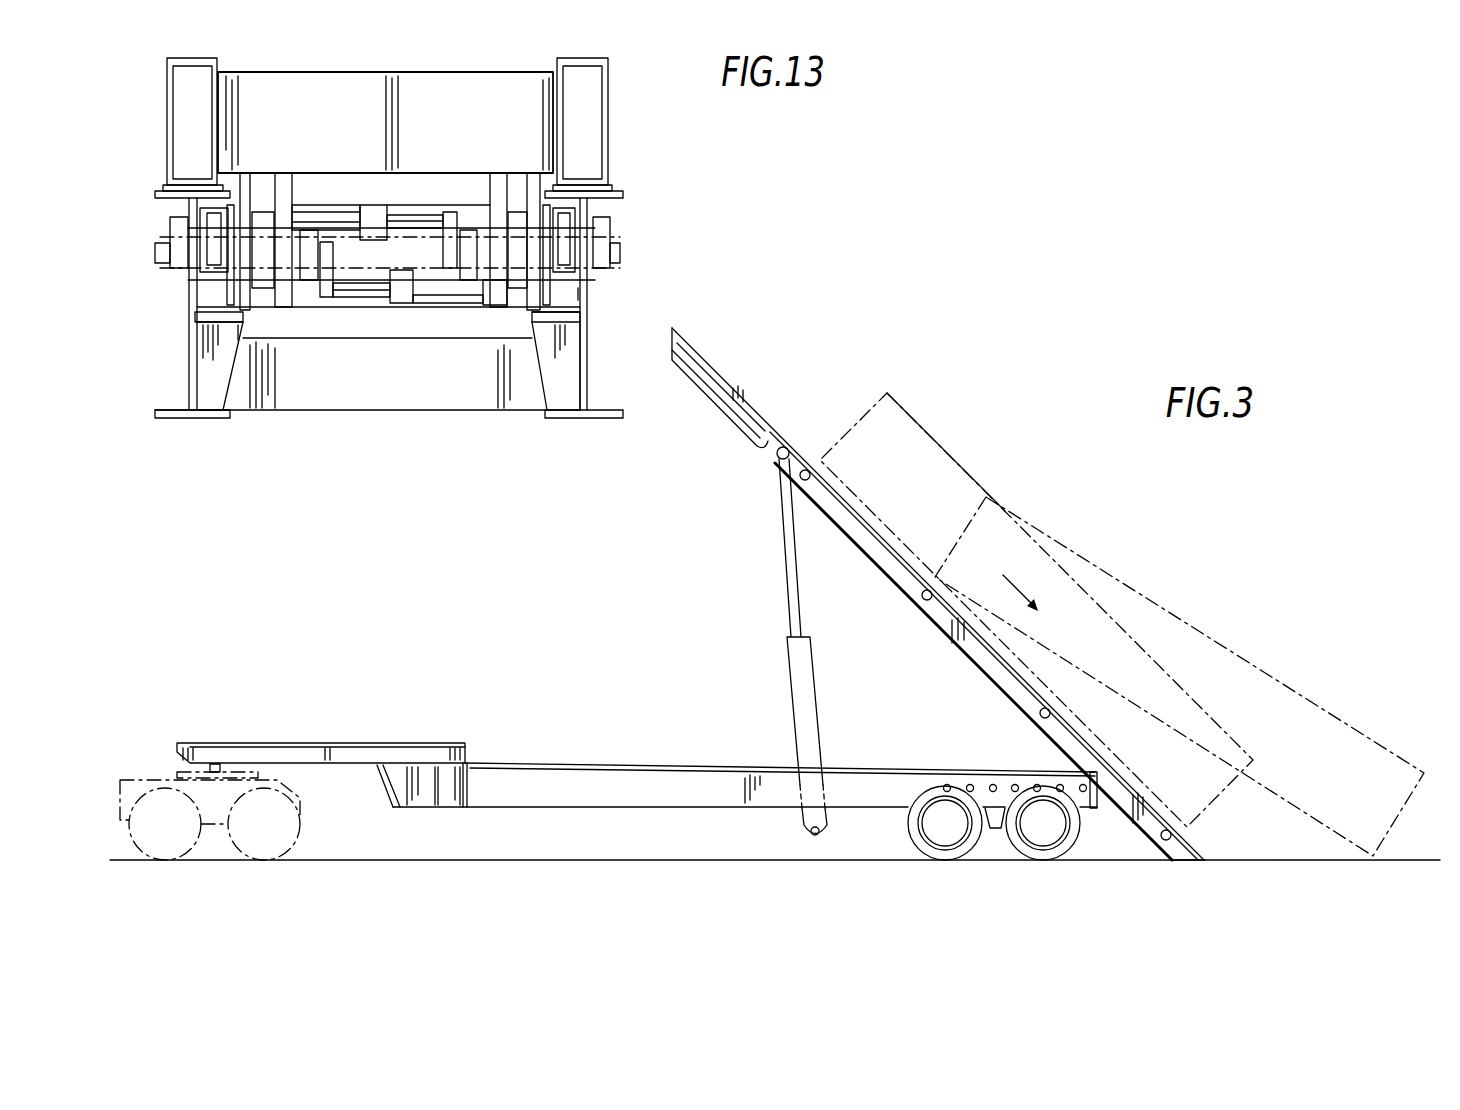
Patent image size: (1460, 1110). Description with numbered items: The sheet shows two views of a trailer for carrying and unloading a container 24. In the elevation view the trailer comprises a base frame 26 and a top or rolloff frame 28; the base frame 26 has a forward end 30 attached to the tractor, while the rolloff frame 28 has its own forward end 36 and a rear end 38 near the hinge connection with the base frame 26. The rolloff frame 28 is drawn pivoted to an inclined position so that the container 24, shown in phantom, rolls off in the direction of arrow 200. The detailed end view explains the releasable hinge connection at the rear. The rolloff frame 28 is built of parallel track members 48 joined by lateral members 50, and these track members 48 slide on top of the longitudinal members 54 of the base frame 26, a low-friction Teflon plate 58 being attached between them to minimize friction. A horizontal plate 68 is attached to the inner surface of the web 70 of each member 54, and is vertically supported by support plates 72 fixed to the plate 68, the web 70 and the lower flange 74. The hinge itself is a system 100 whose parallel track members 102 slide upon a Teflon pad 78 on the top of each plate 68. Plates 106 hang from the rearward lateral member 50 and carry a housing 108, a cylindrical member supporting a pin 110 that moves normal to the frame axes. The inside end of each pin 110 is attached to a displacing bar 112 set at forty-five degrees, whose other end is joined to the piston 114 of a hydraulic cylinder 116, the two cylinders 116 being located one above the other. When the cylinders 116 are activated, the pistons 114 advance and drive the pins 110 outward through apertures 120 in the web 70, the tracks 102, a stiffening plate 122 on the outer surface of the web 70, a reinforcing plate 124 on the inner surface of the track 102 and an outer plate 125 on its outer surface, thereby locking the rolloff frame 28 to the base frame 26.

In FIG. 3, the container 24 is at (933, 435).
In FIG. 13, the base frame 26 is at (156, 193).
In FIG. 3, the base frame 26 is at (615, 790).
In FIG. 3, the rolloff frame 28 is at (775, 437).
In FIG. 3, the forward end 30 is at (313, 743).
In FIG. 3, the forward end 36 is at (730, 383).
In FIG. 3, the rear end 38 is at (1140, 828).
In FIG. 13, the track member 48 is at (608, 115).
In FIG. 13, the lateral member 50 is at (458, 85).
In FIG. 13, the longitudinal member 54 is at (173, 388).
In FIG. 13, the Teflon plate 58 is at (613, 190).
In FIG. 13, the horizontal plate 68 is at (245, 318).
In FIG. 13, the web 70 is at (192, 350).
In FIG. 13, the support plate 72 is at (215, 393).
In FIG. 13, the lower flange 74 is at (182, 418).
In FIG. 13, the Teflon pad 78 is at (530, 313).
In FIG. 13, the system 100 is at (357, 416).
In FIG. 13, the track member 102 is at (232, 212).
In FIG. 13, the plate 106 is at (287, 193).
In FIG. 13, the housing 108 is at (265, 230).
In FIG. 13, the pin 110 is at (622, 252).
In FIG. 13, the displacing bar 112 is at (447, 253).
In FIG. 13, the piston 114 is at (408, 217).
In FIG. 13, the hydraulic cylinder 116 is at (316, 212).
In FIG. 13, the aperture 120 is at (186, 263).
In FIG. 13, the plate 122 is at (608, 303).
In FIG. 13, the reinforcing plate 124 is at (560, 278).
In FIG. 13, the outer plate 125 is at (578, 288).
In FIG. 3, the arrow 200 is at (1341, 790).